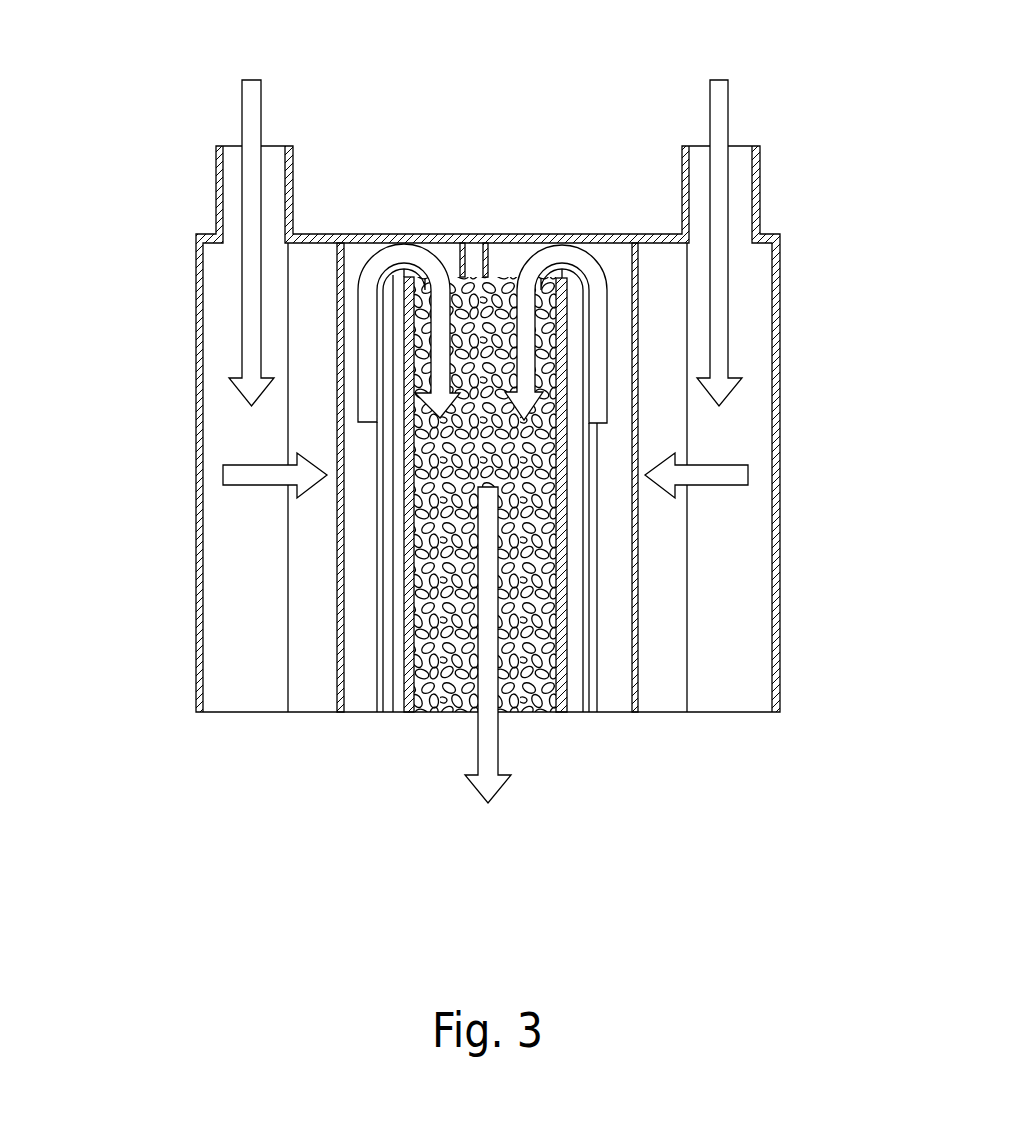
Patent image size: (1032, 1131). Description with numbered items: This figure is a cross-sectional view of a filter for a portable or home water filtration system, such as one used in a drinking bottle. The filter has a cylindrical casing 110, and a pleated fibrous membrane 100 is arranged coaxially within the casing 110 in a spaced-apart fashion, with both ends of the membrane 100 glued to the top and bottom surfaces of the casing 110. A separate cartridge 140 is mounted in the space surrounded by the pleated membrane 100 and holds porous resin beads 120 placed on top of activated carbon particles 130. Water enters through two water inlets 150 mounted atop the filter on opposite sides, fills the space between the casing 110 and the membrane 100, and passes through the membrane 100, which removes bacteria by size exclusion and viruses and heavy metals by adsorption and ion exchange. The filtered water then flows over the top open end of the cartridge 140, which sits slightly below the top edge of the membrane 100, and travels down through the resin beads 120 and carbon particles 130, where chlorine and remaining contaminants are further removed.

The fibrous membrane 100 is at (637, 580).
The cylindrical casing 110 is at (779, 352).
The porous resin beads 120 is at (420, 432).
The activated carbon particles 130 is at (540, 648).
The cartridge 140 is at (407, 618).
The water inlets 150 is at (235, 162).